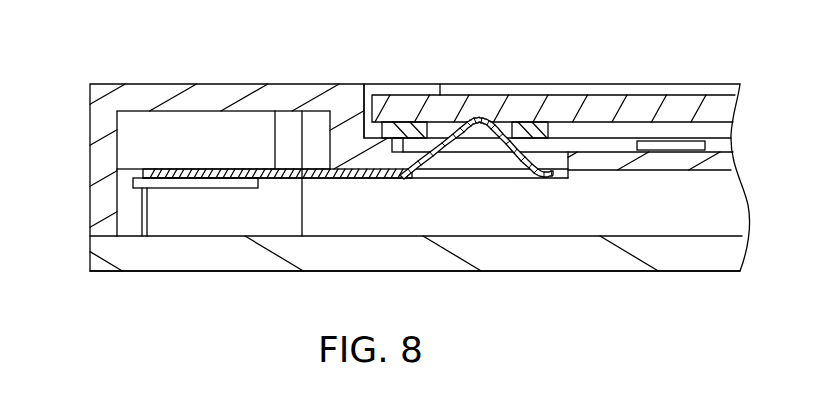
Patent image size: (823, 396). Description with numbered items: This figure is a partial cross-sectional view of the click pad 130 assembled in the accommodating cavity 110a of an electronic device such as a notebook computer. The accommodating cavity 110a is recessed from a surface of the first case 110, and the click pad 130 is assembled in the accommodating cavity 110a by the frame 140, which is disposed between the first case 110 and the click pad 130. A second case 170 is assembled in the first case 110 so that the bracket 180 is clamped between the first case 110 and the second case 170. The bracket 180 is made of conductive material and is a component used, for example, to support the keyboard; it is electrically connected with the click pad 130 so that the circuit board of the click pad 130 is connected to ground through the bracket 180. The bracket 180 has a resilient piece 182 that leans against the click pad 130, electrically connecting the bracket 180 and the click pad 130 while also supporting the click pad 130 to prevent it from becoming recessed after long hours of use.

The first case 110 is at (103, 123).
The accommodating cavity 110a is at (393, 90).
The click pad 130 is at (605, 105).
The frame 140 is at (537, 125).
The second case 170 is at (90, 252).
The bracket 180 is at (143, 170).
The resilient piece 182 is at (485, 120).